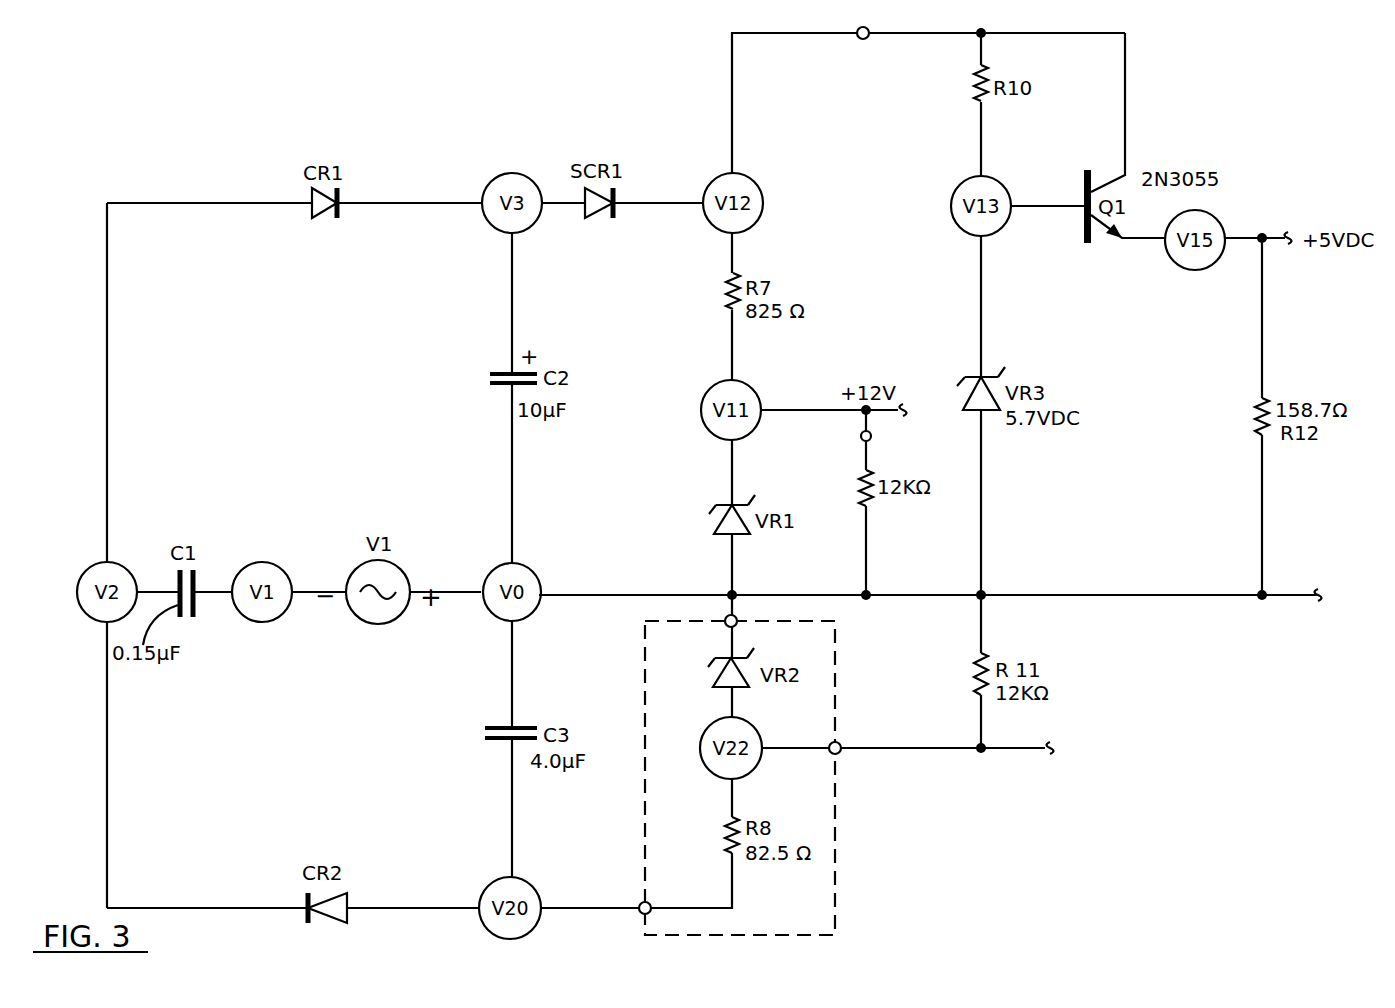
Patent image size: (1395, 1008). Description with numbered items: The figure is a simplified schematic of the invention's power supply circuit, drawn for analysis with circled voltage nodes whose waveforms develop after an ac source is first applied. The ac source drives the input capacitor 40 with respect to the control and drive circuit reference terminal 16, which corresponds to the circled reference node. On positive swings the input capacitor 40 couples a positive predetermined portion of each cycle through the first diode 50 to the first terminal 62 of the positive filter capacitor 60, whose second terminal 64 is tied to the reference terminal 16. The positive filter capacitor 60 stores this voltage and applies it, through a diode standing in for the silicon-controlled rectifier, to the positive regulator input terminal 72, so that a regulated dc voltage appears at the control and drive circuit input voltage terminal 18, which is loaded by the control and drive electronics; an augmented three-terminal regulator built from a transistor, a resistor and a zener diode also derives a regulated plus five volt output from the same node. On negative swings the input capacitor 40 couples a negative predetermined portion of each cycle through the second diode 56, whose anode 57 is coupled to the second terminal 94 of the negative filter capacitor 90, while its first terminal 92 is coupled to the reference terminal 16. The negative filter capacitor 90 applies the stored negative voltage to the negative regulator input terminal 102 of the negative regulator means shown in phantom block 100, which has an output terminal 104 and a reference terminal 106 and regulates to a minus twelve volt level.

The positive regulator input terminal 72 is at (866, 40).
The first diode 50 is at (325, 215).
The positive filter capacitor first terminal 62 is at (510, 342).
The positive filter capacitor 60 is at (490, 383).
The positive filter capacitor second terminal 64 is at (510, 404).
The input capacitor 40 is at (196, 606).
The control and drive circuit reference terminal 16 is at (518, 575).
The negative filter capacitor first terminal 92 is at (512, 685).
The negative filter capacitor 90 is at (506, 728).
The negative filter capacitor second terminal 94 is at (512, 822).
The second diode anode 57 is at (355, 905).
The second diode 56 is at (344, 916).
The negative regulator input terminal 102 is at (642, 902).
The negative regulator output terminal 104 is at (840, 744).
The negative regulator means 100 is at (835, 795).
The control and drive circuit input voltage terminal 18 is at (860, 436).
The negative regulator reference terminal 106 is at (727, 625).